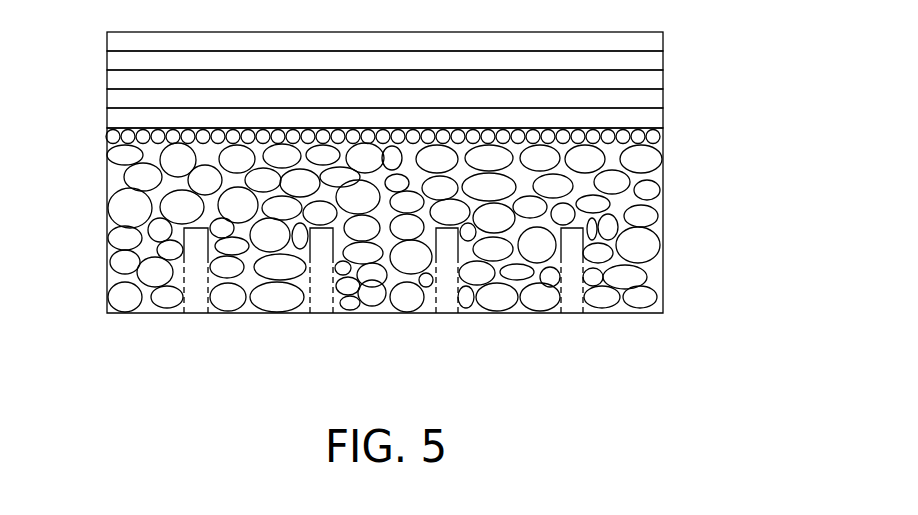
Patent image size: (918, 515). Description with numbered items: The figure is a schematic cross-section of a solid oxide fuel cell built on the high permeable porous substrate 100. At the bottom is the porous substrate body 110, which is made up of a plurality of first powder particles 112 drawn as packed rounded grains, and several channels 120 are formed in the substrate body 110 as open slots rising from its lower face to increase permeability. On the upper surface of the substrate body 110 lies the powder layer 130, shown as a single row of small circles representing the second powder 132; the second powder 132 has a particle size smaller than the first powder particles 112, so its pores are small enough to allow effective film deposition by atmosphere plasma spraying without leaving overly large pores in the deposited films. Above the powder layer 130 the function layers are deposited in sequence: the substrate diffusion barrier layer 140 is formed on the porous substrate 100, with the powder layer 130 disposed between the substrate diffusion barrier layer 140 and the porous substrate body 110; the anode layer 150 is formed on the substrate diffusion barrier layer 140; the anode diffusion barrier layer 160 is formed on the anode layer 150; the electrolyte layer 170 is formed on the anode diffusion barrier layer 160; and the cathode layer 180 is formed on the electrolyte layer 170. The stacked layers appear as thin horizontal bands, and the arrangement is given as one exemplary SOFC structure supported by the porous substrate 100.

The high permeable porous substrate 100 is at (726, 198).
The porous substrate body 110 is at (663, 225).
The first powder particles 112 is at (128, 210).
The channels 120 is at (316, 305).
The powder layer 130 is at (663, 140).
The second powder 132 is at (113, 135).
The substrate diffusion barrier layer 140 is at (663, 120).
The anode layer 150 is at (663, 96).
The anode diffusion barrier layer 160 is at (663, 79).
The electrolyte layer 170 is at (663, 56).
The cathode layer 180 is at (663, 33).